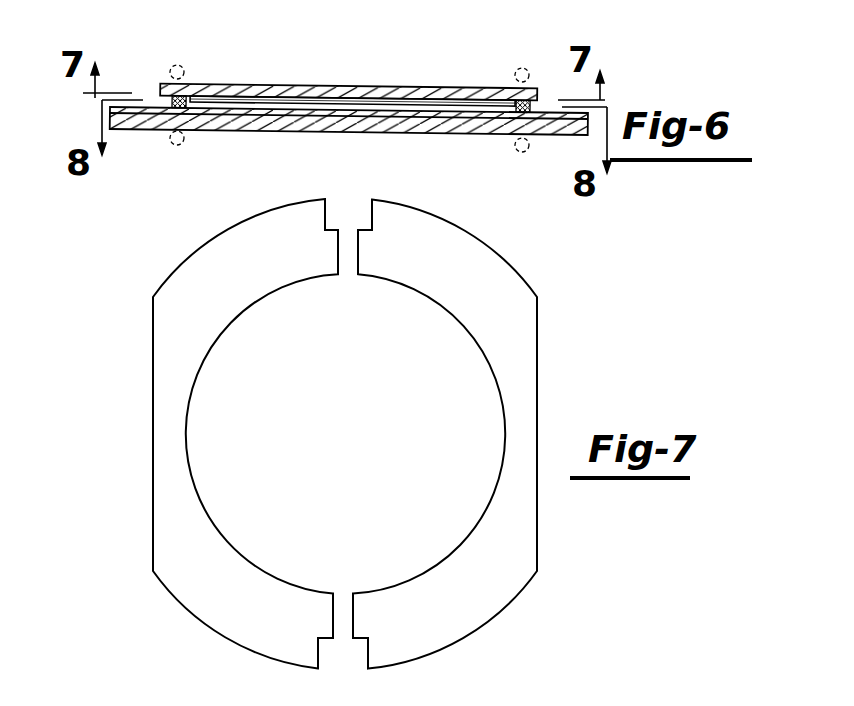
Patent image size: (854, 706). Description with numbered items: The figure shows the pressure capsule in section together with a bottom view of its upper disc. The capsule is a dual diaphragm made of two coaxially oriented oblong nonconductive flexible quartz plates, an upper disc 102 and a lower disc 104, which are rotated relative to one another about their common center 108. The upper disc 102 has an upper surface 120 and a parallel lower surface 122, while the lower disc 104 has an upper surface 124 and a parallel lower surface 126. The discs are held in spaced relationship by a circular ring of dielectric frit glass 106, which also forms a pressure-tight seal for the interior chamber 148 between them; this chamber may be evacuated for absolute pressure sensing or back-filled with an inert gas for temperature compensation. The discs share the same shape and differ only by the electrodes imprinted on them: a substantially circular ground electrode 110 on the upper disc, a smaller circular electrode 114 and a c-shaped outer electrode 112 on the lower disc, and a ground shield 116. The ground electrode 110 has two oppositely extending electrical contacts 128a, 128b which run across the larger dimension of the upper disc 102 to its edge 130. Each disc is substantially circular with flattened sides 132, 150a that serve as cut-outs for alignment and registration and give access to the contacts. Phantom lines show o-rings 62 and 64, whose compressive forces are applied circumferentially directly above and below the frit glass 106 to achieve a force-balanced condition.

In FIG. 6, the o-ring 62 is at (185, 67).
In FIG. 6, the o-ring 64 is at (170, 145).
In FIG. 6, the upper disc 102 is at (538, 98).
In FIG. 7, the upper disc 102 is at (541, 558).
In FIG. 6, the lower disc 104 is at (588, 130).
In FIG. 6, the frit glass 106 is at (548, 106).
In FIG. 7, the common center 108 is at (388, 428).
In FIG. 6, the ground electrode 110 is at (408, 58).
In FIG. 7, the ground electrode 110 is at (506, 412).
In FIG. 6, the c-shaped electrode 112 is at (181, 110).
In FIG. 6, the circular electrode 114 is at (479, 137).
In FIG. 6, the ground shield 116 is at (463, 130).
In FIG. 6, the upper surface 120 is at (515, 60).
In FIG. 6, the lower surface 122 is at (428, 99).
In FIG. 6, the upper surface 124 is at (213, 110).
In FIG. 6, the lower surface 126 is at (291, 126).
In FIG. 7, the electrical contact 128a is at (349, 213).
In FIG. 7, the electrical contact 128b is at (350, 660).
In FIG. 7, the edge 130 is at (238, 185).
In FIG. 7, the flattened side 132 is at (541, 357).
In FIG. 6, the interior chamber 148 is at (222, 104).
In FIG. 7, the flattened side 150a is at (274, 691).